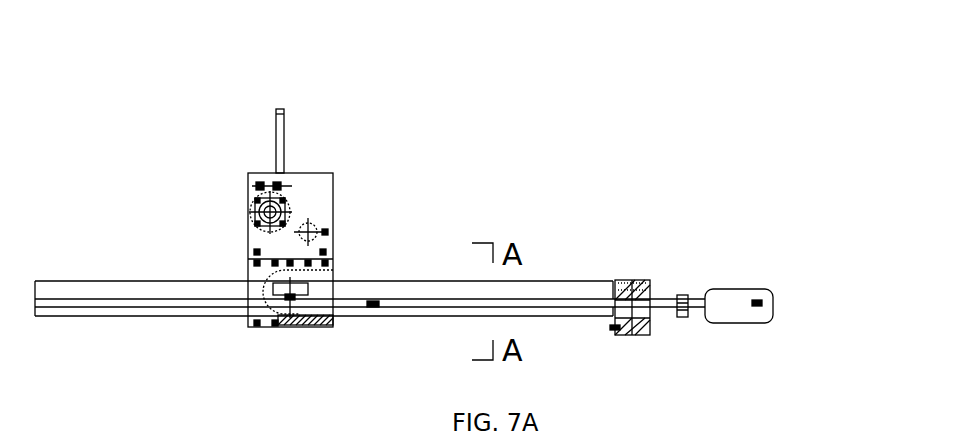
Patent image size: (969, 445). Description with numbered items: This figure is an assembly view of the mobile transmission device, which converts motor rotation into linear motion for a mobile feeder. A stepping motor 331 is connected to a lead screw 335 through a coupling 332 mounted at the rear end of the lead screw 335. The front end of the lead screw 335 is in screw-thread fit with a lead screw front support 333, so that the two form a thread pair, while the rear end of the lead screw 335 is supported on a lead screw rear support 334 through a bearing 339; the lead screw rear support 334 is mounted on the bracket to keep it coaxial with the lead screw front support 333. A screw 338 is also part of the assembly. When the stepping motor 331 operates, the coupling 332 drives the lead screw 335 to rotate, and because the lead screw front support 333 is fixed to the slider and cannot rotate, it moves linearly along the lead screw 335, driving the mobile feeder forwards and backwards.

The stepping motor 331 is at (757, 303).
The coupling 332 is at (683, 297).
The lead screw front support 333 is at (291, 296).
The lead screw rear support 334 is at (640, 281).
The lead screw 335 is at (373, 303).
The screw 338 is at (613, 327).
The bearing 339 is at (632, 281).